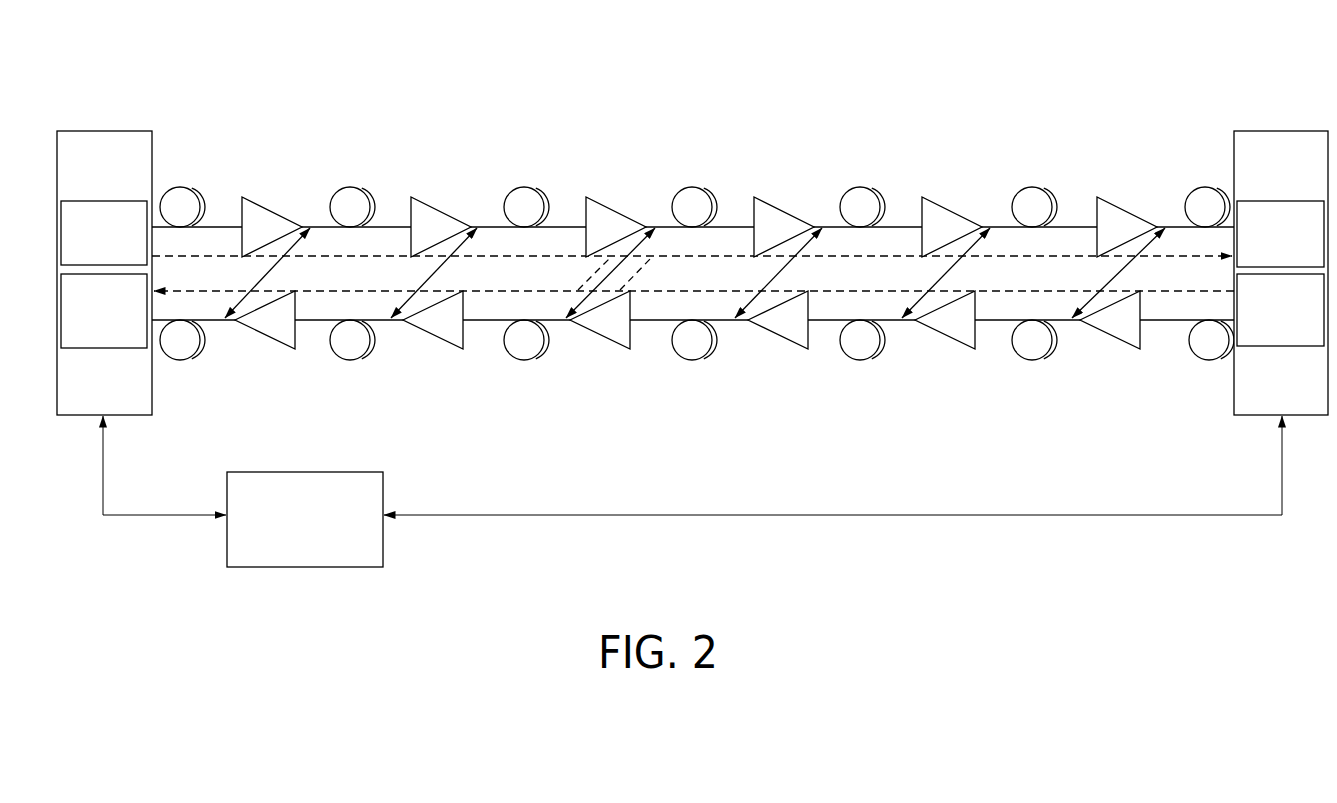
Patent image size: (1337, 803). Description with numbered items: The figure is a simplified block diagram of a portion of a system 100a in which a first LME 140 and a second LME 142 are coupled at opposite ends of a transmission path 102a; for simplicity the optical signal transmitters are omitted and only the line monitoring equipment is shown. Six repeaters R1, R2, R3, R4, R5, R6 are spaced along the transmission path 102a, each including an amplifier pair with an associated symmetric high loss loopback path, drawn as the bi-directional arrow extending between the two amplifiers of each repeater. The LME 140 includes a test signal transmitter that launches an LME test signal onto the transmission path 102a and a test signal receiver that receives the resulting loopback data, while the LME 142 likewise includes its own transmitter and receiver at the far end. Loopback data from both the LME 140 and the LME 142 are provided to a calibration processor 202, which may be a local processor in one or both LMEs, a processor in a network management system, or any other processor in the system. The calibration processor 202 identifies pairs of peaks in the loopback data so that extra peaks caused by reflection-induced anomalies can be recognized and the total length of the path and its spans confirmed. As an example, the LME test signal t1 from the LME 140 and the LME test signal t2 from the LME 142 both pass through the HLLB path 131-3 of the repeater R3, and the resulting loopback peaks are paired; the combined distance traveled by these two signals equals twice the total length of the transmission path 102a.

The system 100a is at (622, 92).
The transmission path 102a is at (728, 416).
The first LME 140 is at (85, 182).
The second LME 142 is at (1262, 182).
The calibration processor 202 is at (287, 554).
The HLLB path 131-3 is at (621, 268).
The repeater R1 is at (267, 275).
The repeater R2 is at (434, 275).
The repeater R3 is at (610, 275).
The repeater R4 is at (778, 275).
The repeater R5 is at (946, 275).
The repeater R6 is at (1118, 275).
The LME test signal t1 is at (383, 258).
The LME test signal t2 is at (1023, 258).